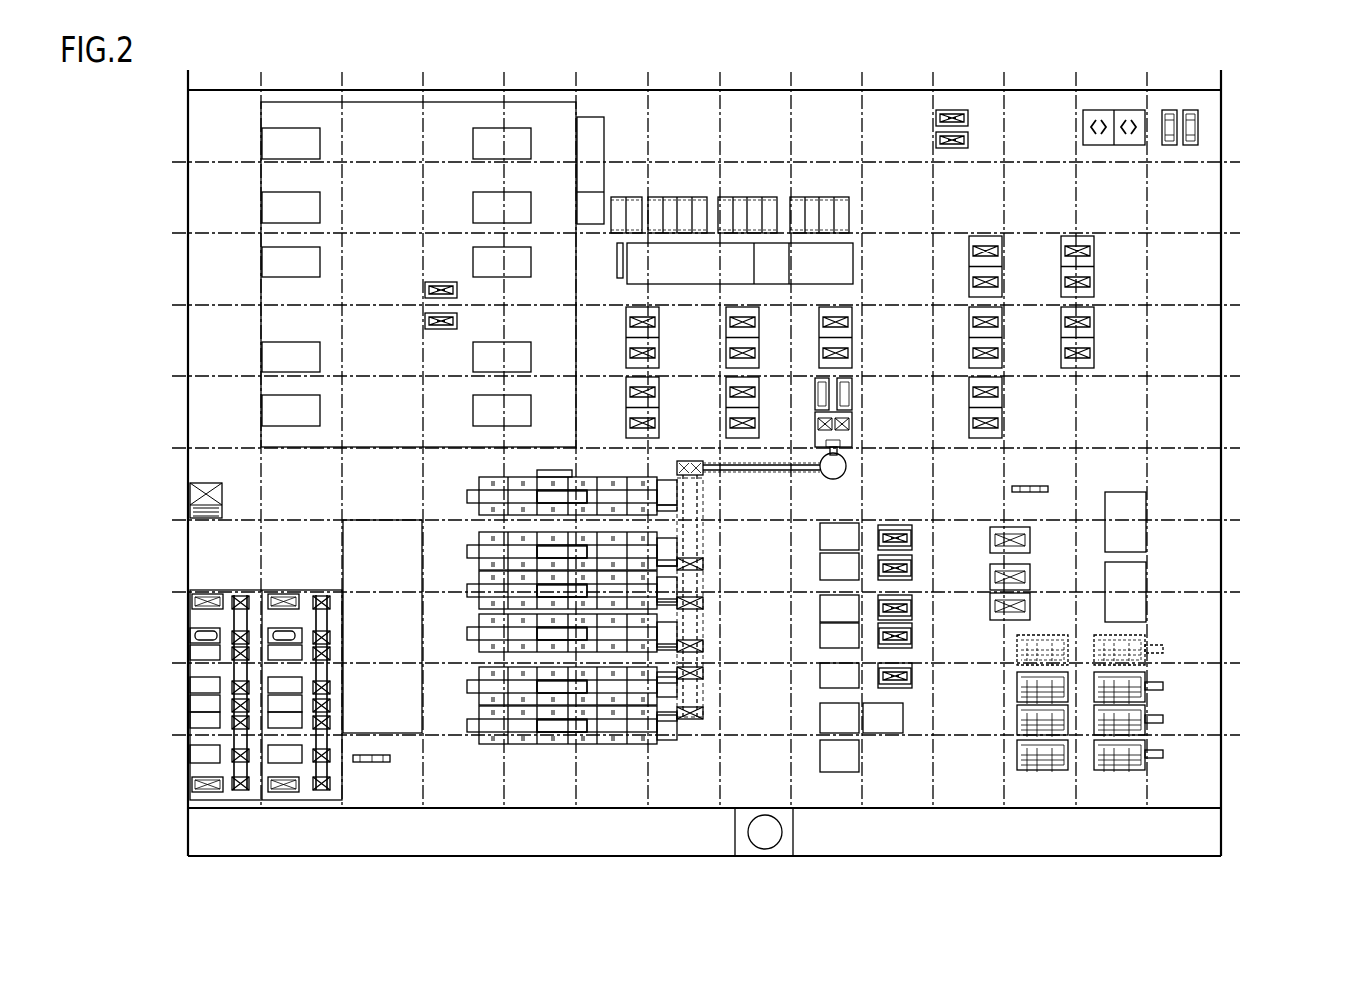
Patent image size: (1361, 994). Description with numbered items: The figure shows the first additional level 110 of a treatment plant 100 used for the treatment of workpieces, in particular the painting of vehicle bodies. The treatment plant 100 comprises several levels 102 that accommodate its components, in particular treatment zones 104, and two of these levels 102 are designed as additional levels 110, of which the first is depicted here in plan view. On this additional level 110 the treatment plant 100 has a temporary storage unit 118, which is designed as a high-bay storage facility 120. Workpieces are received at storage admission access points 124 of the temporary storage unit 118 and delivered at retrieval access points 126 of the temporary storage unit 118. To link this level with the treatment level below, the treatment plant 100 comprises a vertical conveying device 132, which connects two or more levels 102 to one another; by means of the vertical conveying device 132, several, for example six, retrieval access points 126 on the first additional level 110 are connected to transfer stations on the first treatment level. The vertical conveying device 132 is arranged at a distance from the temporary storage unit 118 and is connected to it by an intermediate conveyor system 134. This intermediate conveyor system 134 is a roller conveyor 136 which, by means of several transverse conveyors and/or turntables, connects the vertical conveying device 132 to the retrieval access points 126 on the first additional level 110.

The treatment plant 100 is at (1272, 314).
The level 102 is at (1233, 92).
The additional level 110 is at (1236, 122).
The vertical conveying device 132 is at (856, 410).
The intermediate conveyor system 134 is at (750, 469).
The roller conveyor 136 is at (782, 469).
The treatment zone 104 is at (310, 816).
The high-bay storage facility 120 is at (528, 728).
The temporary storage unit 118 is at (570, 718).
The storage admission access point 124 is at (657, 508).
The retrieval access point 126 is at (722, 902).